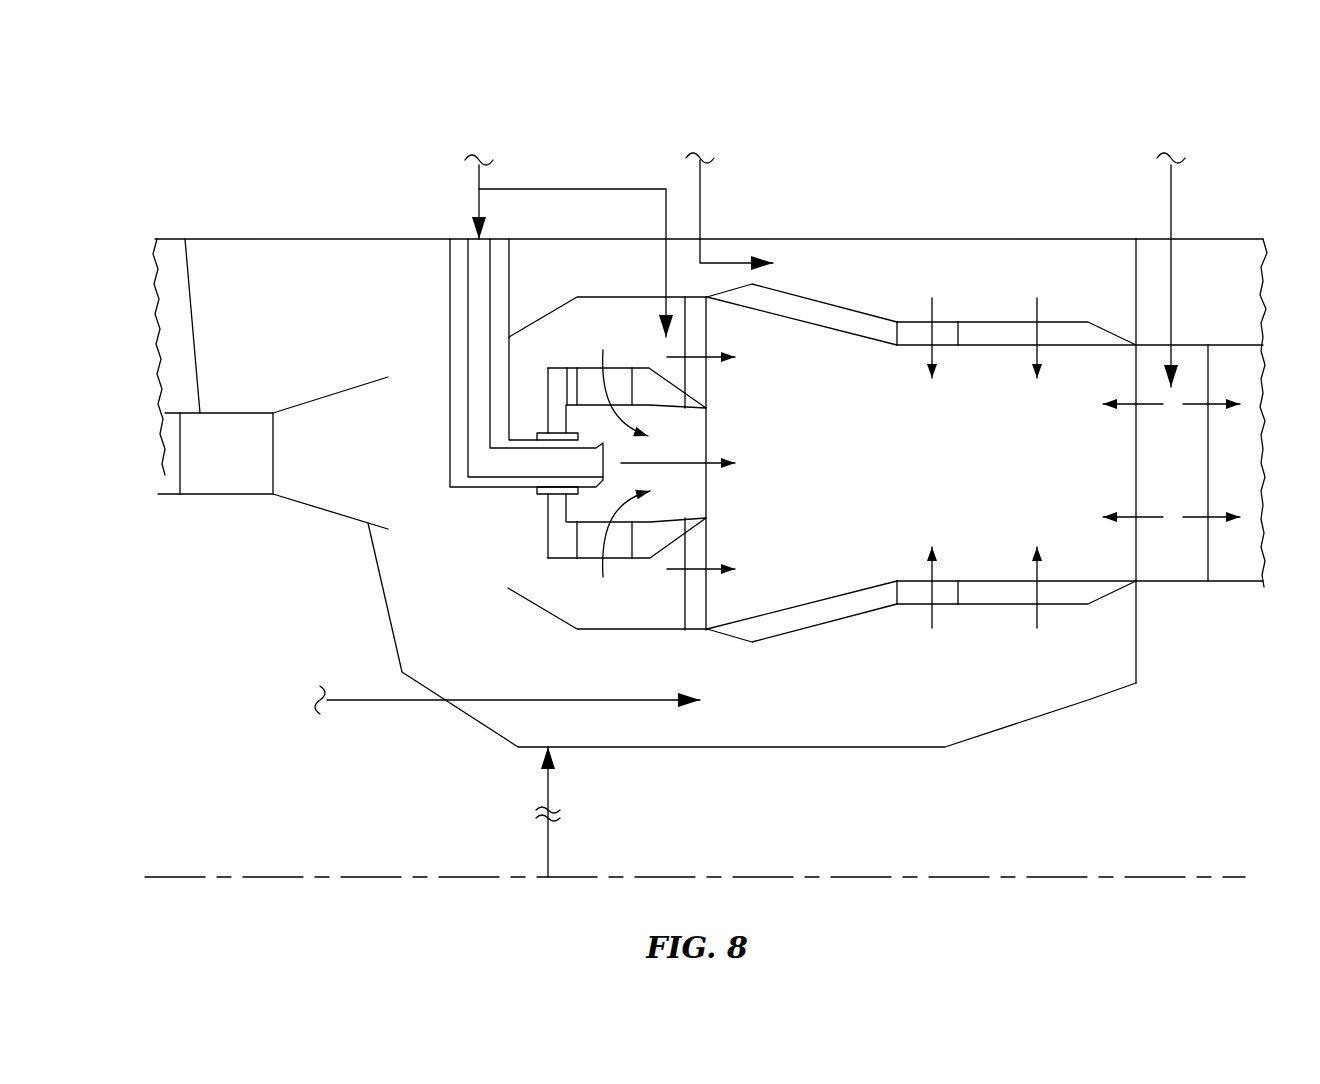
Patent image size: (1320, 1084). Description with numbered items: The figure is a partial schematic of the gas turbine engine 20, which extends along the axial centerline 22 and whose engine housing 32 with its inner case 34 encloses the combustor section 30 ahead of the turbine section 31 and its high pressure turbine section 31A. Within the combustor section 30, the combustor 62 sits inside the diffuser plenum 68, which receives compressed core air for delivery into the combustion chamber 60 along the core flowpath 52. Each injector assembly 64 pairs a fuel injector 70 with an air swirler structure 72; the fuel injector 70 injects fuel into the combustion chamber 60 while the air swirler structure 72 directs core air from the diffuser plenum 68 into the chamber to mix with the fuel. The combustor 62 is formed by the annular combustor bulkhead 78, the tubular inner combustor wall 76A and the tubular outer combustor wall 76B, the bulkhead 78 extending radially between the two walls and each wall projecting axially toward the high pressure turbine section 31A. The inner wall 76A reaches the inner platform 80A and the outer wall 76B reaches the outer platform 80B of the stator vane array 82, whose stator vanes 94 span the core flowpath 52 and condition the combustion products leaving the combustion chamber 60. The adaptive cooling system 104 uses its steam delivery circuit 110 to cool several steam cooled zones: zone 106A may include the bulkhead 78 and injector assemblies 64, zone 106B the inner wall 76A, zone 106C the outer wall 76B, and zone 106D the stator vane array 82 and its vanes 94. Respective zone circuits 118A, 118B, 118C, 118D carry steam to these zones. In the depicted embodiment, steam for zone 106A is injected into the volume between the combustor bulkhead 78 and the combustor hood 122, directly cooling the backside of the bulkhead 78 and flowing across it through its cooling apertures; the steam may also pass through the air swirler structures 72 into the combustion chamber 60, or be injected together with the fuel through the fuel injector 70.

The gas turbine engine 20 is at (158, 133).
The axial centerline 22 is at (165, 877).
The combustor section 30 is at (945, 200).
The turbine section 31 is at (1223, 351).
The high pressure turbine section 31A is at (1249, 201).
The engine housing 32 is at (427, 189).
The inner case 34 is at (320, 239).
The core flowpath 52 is at (165, 476).
The combustion chamber 60 is at (916, 471).
The combustor 62 is at (997, 298).
The injector assembly 64 is at (433, 360).
The diffuser plenum 68 is at (283, 344).
The fuel injector 70 is at (433, 448).
The air swirler structure 72 is at (567, 357).
The inner combustor wall 76A is at (870, 578).
The outer combustor wall 76B is at (872, 352).
The combustor bulkhead 78 is at (720, 552).
The inner platform 80A is at (1178, 583).
The outer platform 80B is at (1198, 345).
The stator vane array 82 is at (1213, 370).
The stator vane 94 is at (1209, 473).
The adaptive cooling system 104 is at (755, 151).
The steam delivery circuit 110 is at (755, 151).
The steam cooled zone 106A is at (750, 448).
The steam cooled zone 106B is at (1005, 565).
The steam cooled zone 106C is at (982, 352).
The steam cooled zone 106D is at (1125, 445).
The zone circuit 118A is at (479, 180).
The zone circuit 118B is at (380, 700).
The zone circuit 118C is at (700, 183).
The zone circuit 118D is at (1171, 175).
The combustor hood 122 is at (535, 612).